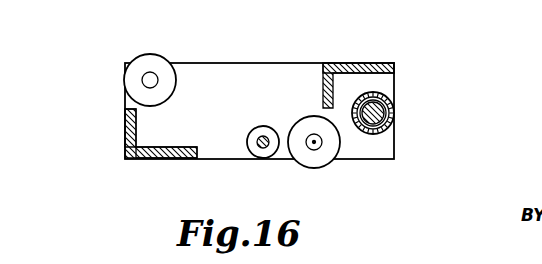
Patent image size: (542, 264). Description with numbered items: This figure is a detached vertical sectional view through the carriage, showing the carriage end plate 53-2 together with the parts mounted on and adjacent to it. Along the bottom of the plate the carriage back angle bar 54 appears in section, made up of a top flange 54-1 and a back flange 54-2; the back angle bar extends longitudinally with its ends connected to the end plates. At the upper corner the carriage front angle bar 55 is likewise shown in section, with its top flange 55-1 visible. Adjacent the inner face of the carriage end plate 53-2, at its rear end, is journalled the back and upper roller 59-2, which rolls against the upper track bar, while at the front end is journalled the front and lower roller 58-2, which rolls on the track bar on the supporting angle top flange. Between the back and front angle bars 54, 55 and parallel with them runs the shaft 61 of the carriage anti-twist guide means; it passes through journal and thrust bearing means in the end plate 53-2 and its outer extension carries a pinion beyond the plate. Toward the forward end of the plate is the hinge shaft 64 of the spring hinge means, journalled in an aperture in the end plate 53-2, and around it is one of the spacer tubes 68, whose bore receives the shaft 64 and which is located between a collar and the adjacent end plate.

The carriage end plate 53-2 is at (220, 74).
The carriage back angle bar 54 is at (130, 144).
The top flange 54-1 is at (162, 150).
The back flange 54-2 is at (130, 111).
The carriage front angle bar 55 is at (365, 63).
The top flange 55-1 is at (392, 74).
The back and upper roller 59-2 is at (150, 62).
The shaft 61 is at (262, 152).
The front and lower roller 58-2 is at (322, 152).
The hinge shaft 64 is at (386, 111).
The spacer tube 68 is at (389, 126).